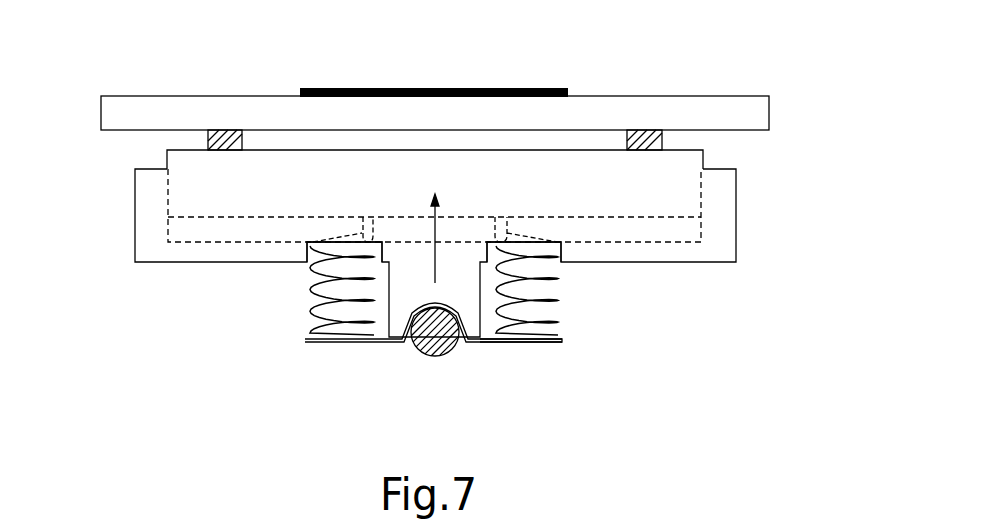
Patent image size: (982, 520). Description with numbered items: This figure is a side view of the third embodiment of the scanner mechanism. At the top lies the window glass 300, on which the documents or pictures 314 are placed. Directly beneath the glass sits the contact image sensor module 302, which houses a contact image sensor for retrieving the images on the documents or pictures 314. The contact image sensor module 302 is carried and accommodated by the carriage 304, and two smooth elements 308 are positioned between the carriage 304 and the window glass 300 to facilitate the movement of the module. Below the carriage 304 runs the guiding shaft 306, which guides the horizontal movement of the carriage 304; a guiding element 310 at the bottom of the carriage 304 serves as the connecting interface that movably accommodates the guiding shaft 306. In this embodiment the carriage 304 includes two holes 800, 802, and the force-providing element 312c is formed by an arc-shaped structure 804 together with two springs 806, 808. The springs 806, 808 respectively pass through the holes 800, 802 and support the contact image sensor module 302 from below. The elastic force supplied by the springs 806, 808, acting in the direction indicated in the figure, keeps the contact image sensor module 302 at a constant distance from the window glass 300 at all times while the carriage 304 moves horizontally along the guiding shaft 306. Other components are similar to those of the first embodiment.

The window glass 300 is at (747, 113).
The contact image sensor module 302 is at (702, 155).
The carriage 304 is at (155, 219).
The guiding shaft 306 is at (443, 348).
The smooth elements 308 is at (225, 131).
The guiding element 310 is at (463, 268).
The force-providing element 312c is at (562, 341).
The documents or pictures 314 is at (423, 89).
The hole 800 is at (318, 245).
The hole 802 is at (543, 252).
The arc-shaped structure 804 is at (402, 345).
The spring 806 is at (317, 325).
The spring 808 is at (558, 322).